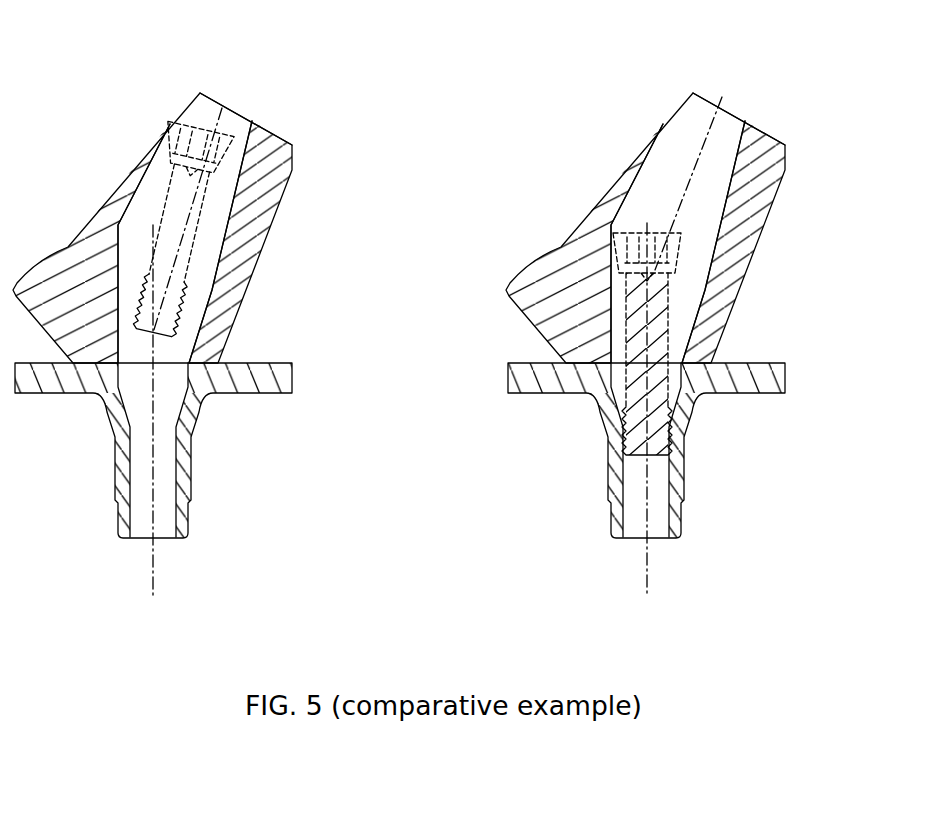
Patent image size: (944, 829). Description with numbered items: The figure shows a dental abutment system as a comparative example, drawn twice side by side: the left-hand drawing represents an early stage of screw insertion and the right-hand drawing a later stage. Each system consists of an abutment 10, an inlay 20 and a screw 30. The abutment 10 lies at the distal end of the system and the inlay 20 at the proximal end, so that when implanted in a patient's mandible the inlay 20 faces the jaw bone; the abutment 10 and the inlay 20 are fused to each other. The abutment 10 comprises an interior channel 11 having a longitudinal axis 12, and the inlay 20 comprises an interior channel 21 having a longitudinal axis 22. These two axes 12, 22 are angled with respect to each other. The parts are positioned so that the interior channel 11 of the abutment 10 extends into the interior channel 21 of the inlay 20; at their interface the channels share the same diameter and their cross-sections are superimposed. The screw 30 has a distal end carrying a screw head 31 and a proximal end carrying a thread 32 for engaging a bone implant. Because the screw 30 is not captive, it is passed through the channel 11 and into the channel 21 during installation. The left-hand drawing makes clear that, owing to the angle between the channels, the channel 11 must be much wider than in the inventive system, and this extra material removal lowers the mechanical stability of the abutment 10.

The abutment 10 is at (100, 218).
The interior channel 11 is at (207, 110).
The longitudinal axis 12 is at (217, 122).
The inlay 20 is at (292, 373).
The interior channel 21 is at (165, 523).
The longitudinal axis 22 is at (152, 570).
The screw 30 is at (193, 260).
The screw head 31 is at (199, 127).
The thread 32 is at (180, 322).